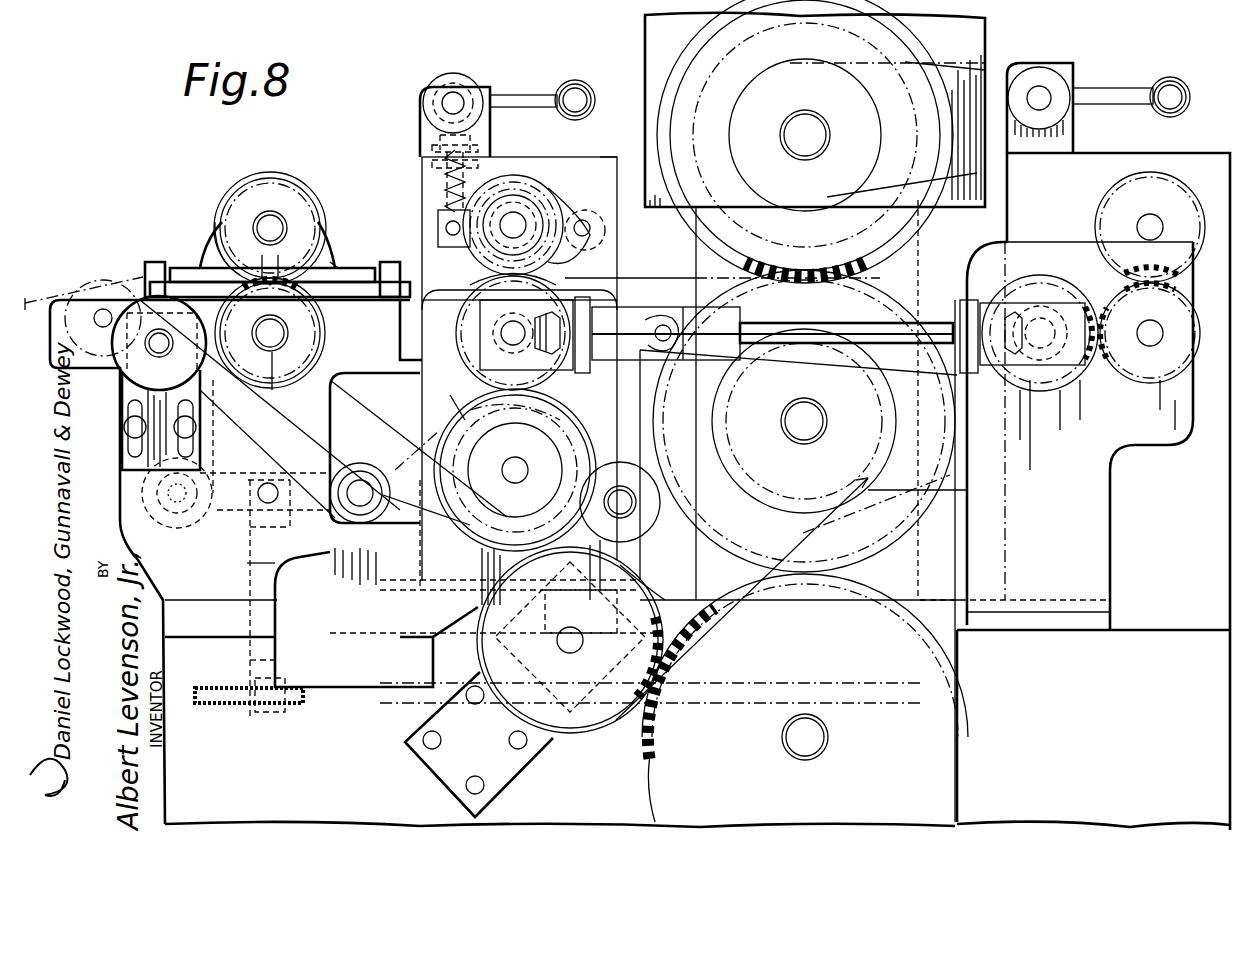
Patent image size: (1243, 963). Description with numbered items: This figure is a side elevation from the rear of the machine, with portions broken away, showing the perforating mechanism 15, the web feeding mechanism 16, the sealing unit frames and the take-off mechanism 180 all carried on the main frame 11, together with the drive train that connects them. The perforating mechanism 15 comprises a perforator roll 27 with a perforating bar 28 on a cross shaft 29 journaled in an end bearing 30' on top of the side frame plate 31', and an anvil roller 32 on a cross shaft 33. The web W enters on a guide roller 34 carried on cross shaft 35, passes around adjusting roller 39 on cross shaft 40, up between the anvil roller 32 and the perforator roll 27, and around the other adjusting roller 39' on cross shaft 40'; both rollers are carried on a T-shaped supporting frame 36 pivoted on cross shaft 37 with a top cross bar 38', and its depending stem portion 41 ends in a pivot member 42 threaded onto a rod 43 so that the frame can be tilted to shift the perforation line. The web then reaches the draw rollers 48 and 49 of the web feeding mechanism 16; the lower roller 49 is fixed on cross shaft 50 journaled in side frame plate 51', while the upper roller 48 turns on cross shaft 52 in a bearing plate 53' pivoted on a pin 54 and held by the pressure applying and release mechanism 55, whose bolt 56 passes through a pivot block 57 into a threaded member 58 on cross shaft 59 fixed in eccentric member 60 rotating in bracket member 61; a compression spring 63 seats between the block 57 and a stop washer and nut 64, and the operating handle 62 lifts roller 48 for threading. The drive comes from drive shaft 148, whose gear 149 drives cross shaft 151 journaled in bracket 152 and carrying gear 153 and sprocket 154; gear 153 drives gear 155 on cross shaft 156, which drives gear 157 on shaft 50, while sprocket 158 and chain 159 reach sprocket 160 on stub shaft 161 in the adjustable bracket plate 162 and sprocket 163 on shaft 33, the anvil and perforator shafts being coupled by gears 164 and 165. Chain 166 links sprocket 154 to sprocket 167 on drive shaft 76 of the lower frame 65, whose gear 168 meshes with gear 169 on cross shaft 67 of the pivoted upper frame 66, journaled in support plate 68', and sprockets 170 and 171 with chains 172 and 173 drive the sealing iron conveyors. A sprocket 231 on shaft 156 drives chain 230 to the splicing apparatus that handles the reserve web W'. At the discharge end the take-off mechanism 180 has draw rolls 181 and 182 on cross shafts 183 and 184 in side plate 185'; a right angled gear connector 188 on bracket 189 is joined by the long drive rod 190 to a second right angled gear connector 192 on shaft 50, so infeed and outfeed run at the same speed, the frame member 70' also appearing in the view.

The frame 11 is at (180, 600).
The perforating mechanism 15 is at (233, 191).
The web feeding mechanism 16 is at (606, 128).
The perforator roll 27 is at (288, 205).
The perforating bar 28 is at (318, 223).
The cross shaft 29 is at (276, 226).
The end bearing 30' is at (350, 245).
The side frame plate 31' is at (146, 481).
The anvil roller 32 is at (325, 320).
The cross shaft 33 is at (288, 334).
The guide roller 34 is at (114, 290).
The cross shaft 35 is at (101, 309).
The T-shaped supporting frame 36 is at (247, 563).
The cross shaft 37 is at (268, 483).
The top cross bar 38' is at (285, 531).
The adjusting roller 39 is at (177, 505).
The adjusting roller 39' is at (374, 499).
The cross shaft 40 is at (165, 518).
The cross shaft 40' is at (360, 480).
The depending stem portion 41 is at (250, 660).
The pivot member 42 is at (269, 712).
The rod 43 is at (232, 705).
The draw roller 48 is at (556, 196).
The draw roller 49 is at (572, 372).
The cross shaft 50 is at (490, 290).
The side frame plate 51' is at (613, 139).
The cross shaft 52 is at (514, 212).
The bearing plate 53' is at (524, 196).
The pin 54 is at (582, 238).
The pressure applying and release mechanism 55 is at (416, 156).
The headed pin or bolt 56 is at (440, 182).
The pivot block 57 is at (440, 228).
The member 58 is at (470, 136).
The cross shaft 59 is at (458, 98).
The eccentric member 60 is at (436, 82).
The bracket member 61 is at (421, 122).
The operating handle 62 is at (527, 96).
The compression spring 63 is at (446, 197).
The stop washer and nut 64 is at (432, 147).
The lower frame 65 is at (950, 543).
The upper frame 66 is at (986, 36).
The cross shaft 67 is at (810, 148).
The support plate 68' is at (829, 400).
The frame member 70' is at (662, 465).
The drive shaft 76 is at (804, 404).
The drive shaft 148 is at (828, 741).
The gear 149 is at (640, 775).
The cross shaft 151 is at (570, 652).
The bracket 152 is at (510, 770).
The gear 153 is at (578, 733).
The sprocket 154 is at (650, 592).
The gear 155 is at (585, 422).
The cross shaft 156 is at (515, 458).
The gear 157 is at (478, 362).
The sprocket 158 is at (463, 424).
The chain 159 is at (382, 384).
The sprocket 160 is at (212, 377).
The stub shaft 161 is at (162, 356).
The bracket plate 162 is at (137, 440).
The sprocket 163 is at (292, 372).
The gear 164 is at (238, 292).
The gear 165 is at (220, 218).
The chain 166 is at (858, 515).
The sprocket 167 is at (763, 594).
The gear 168 is at (878, 294).
The gear 169 is at (920, 56).
The sprocket 170 is at (765, 78).
The sprocket 171 is at (760, 490).
The chain 172 is at (912, 60).
The chain 173 is at (877, 491).
The take-off mechanism 180 is at (1208, 130).
The draw roll 181 is at (1185, 192).
The draw roll 182 is at (1182, 305).
The cross shaft 183 is at (1151, 214).
The cross shaft 184 is at (1150, 346).
The side plate 185' is at (1098, 112).
The right angled gear connector 188 is at (1085, 370).
The bracket 189 is at (1125, 445).
The drive rod 190 is at (926, 322).
The right angled gear connector 192 is at (480, 318).
The drive chain 230 is at (410, 462).
The sprocket 231 is at (523, 428).
The web W is at (452, 282).
The reserve web W' is at (558, 349).